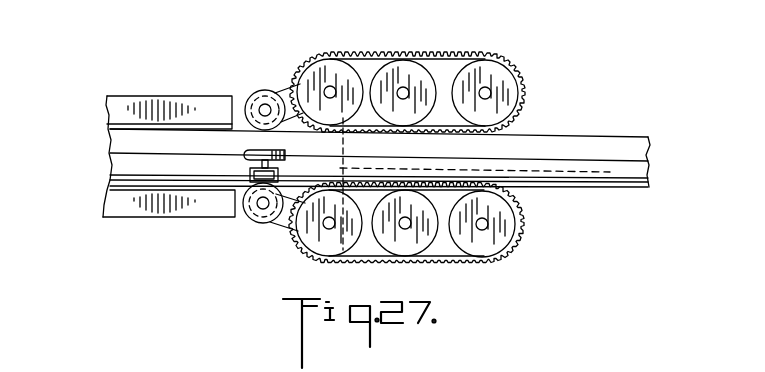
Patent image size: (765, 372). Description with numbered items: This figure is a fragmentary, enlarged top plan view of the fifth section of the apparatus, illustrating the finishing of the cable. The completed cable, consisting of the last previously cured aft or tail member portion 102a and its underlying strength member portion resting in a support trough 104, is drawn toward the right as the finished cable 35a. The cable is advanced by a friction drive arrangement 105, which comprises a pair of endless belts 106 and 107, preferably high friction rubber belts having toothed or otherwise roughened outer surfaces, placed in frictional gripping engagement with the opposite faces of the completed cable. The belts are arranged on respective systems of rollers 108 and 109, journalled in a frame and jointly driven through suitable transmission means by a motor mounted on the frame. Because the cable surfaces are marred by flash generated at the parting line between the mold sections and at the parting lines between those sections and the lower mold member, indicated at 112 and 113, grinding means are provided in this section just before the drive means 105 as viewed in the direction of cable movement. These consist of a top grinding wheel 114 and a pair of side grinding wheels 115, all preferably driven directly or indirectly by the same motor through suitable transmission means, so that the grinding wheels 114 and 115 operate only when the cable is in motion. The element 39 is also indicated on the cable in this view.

The finished cable 35a is at (592, 134).
The rail 39 is at (598, 177).
The aft or tail member portion 102a is at (110, 137).
The support trough 104 is at (123, 205).
The friction drive arrangement 105 is at (537, 80).
The endless belt 106 is at (517, 248).
The endless belt 107 is at (392, 53).
The rollers 108 is at (328, 248).
The rollers 109 is at (503, 30).
The flash 112 is at (118, 153).
The flash 113 is at (177, 128).
The top grinding wheel 114 is at (250, 152).
The side grinding wheels 115 is at (263, 92).